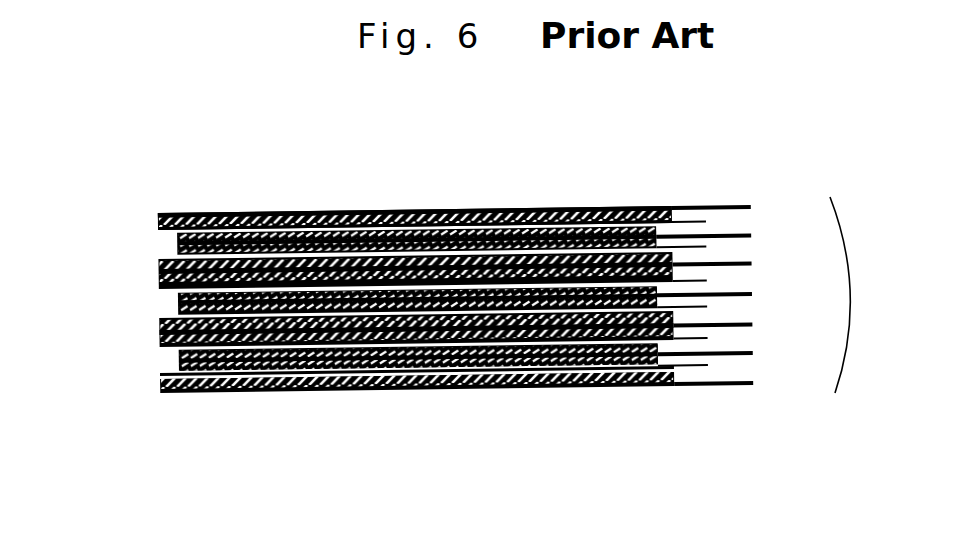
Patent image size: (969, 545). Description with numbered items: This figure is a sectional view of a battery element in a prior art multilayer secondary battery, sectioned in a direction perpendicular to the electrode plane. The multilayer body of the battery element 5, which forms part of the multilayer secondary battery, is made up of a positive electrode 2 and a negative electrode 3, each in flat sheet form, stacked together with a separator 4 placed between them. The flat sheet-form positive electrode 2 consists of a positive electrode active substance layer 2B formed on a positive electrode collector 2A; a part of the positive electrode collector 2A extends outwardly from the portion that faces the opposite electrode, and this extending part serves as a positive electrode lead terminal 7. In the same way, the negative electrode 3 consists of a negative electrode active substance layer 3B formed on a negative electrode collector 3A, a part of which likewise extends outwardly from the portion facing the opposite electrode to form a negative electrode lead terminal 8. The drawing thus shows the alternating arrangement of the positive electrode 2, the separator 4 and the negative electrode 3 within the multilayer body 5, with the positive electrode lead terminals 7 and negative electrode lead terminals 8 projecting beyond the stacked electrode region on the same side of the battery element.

The positive electrode 2 is at (313, 212).
The positive electrode collector 2A is at (177, 245).
The positive electrode active substance layer 2B is at (473, 208).
The negative electrode 3 is at (238, 216).
The negative electrode collector 3A is at (157, 328).
The negative electrode active substance layer 3B is at (412, 385).
The separator 4 is at (162, 230).
The multilayer body of a battery element 5 is at (863, 295).
The positive electrode lead terminal 7 is at (752, 292).
The negative electrode lead terminal 8 is at (753, 323).